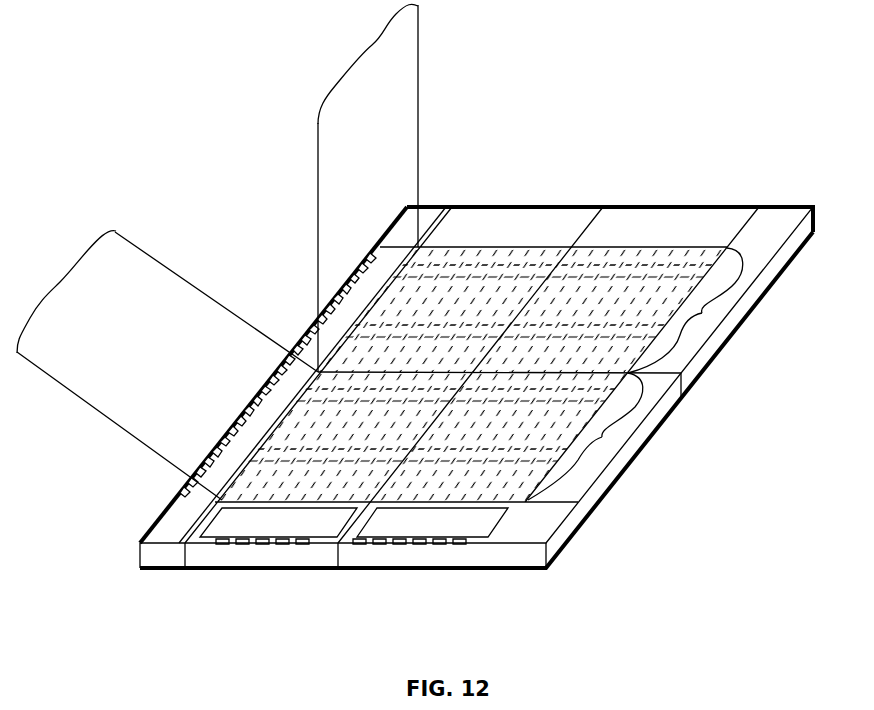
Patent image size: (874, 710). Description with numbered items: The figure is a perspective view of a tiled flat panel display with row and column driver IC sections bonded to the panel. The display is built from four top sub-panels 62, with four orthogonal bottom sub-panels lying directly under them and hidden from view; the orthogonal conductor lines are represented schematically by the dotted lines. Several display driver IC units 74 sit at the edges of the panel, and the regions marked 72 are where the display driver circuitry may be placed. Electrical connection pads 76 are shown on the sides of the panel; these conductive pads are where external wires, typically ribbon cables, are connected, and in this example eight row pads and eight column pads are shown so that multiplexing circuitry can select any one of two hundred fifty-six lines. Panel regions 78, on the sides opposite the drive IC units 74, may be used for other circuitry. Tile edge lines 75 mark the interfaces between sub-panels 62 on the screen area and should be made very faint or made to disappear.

The top sub-panel 62 is at (690, 500).
The display driver circuitry region 72 is at (383, 267).
The display driver IC unit 74 is at (173, 522).
The tile edge line 75 is at (586, 228).
The electrical connection pad 76 is at (361, 265).
The panel region 78 is at (508, 223).